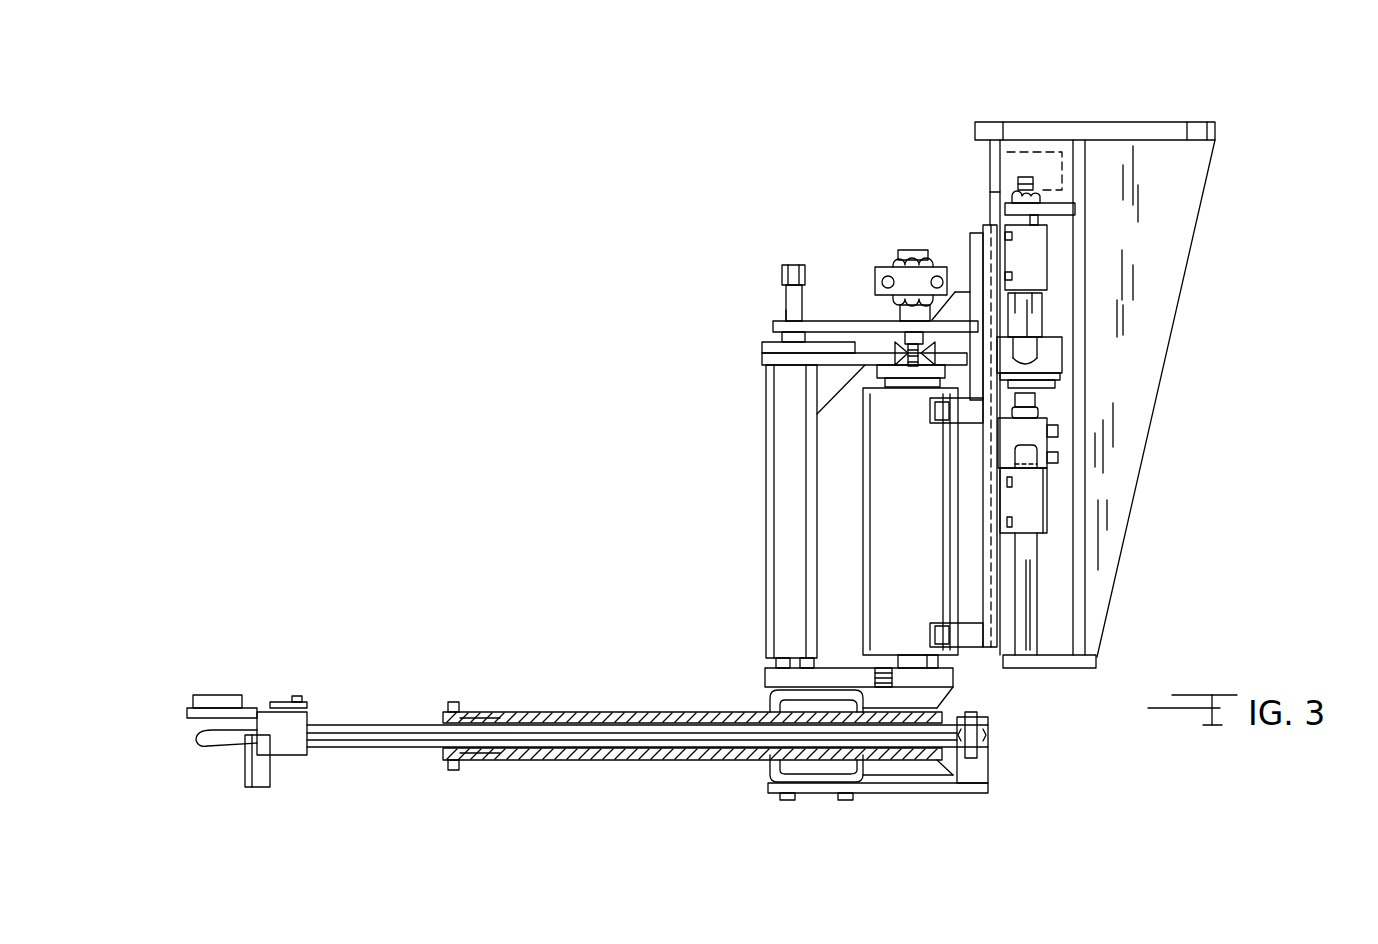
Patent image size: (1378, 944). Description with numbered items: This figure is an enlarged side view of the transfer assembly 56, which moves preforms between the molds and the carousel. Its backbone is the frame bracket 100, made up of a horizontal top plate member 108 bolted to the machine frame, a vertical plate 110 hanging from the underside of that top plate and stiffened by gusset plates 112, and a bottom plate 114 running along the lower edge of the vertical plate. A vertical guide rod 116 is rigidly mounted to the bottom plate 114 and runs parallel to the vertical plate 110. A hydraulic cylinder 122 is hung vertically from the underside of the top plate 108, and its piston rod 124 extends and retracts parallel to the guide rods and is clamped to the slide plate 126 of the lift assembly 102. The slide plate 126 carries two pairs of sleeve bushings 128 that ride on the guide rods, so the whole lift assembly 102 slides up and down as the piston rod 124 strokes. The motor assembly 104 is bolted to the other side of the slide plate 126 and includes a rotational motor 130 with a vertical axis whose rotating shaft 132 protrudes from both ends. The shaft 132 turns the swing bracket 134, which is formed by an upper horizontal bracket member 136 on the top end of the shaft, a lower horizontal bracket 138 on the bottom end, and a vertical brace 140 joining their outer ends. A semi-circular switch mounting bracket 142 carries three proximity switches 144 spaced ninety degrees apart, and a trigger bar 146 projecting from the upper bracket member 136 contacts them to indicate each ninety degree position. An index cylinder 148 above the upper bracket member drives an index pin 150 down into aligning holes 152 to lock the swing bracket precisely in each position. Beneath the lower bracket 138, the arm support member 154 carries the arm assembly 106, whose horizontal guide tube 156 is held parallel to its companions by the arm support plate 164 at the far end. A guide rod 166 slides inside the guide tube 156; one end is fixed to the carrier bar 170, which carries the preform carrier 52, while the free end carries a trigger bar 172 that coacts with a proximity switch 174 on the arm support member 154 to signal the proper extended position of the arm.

The transfer assembly 56 is at (1285, 429).
The frame bracket 100 is at (1226, 194).
The lift assembly 102 is at (1000, 445).
The motor assembly 104 is at (847, 278).
The arm assembly 106 is at (647, 692).
The horizontal top plate member 108 is at (1098, 122).
The vertical plate 110 is at (1087, 228).
The gusset plates 112 is at (1176, 358).
The bottom plate 114 is at (1065, 670).
The guide rod 116 is at (1040, 362).
The hydraulic cylinder 122 is at (1040, 407).
The piston rod 124 is at (1068, 413).
The slide plate 126 is at (1000, 572).
The sleeve bushings 128 is at (1030, 262).
The rotational motor 130 is at (863, 563).
The rotating shaft 132 is at (903, 662).
The swing bracket 134 is at (755, 460).
The upper horizontal bracket member 136 is at (765, 362).
The lower horizontal bracket 138 is at (765, 672).
The vertical brace 140 is at (768, 510).
The switch mounting bracket 142 is at (782, 323).
The proximity switches 144 is at (790, 280).
The trigger bar 146 is at (765, 348).
The index cylinder 148 is at (912, 250).
The index pin 150 is at (903, 343).
The aligning holes 152 is at (890, 362).
The arm support member 154 is at (765, 778).
The guide tube 156 is at (605, 760).
The arm support plate 164 is at (455, 700).
The guide rod 166 is at (377, 722).
The carrier bar 170 is at (288, 744).
The trigger bar 172 is at (978, 712).
The proximity switch 174 is at (990, 762).
The preform carrier 52 is at (320, 693).